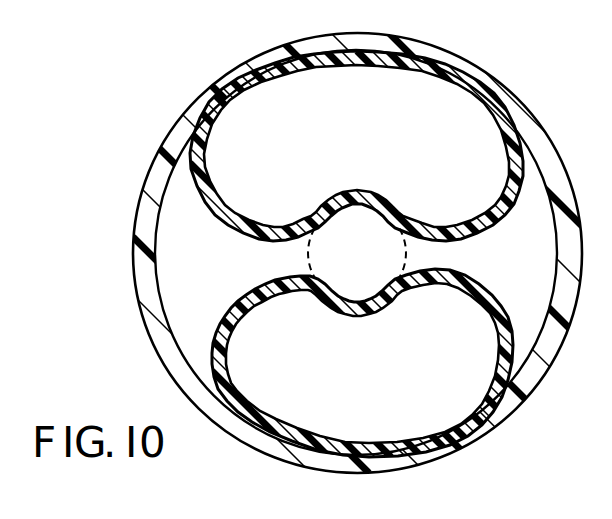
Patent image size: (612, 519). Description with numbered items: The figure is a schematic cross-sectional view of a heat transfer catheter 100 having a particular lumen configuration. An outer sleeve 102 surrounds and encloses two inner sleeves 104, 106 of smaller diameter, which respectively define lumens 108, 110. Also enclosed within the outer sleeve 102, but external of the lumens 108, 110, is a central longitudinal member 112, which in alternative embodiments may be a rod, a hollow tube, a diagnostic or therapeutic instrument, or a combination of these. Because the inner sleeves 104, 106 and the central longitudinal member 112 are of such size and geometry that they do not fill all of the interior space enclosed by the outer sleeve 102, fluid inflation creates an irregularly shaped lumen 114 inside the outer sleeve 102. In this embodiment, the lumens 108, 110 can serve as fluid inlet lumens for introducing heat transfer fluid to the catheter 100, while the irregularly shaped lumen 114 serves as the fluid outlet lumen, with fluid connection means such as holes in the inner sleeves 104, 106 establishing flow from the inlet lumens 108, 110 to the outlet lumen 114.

The heat transfer catheter 100 is at (522, 74).
The outer sleeve 102 is at (197, 111).
The inner sleeve 104 is at (205, 197).
The inner sleeve 106 is at (213, 352).
The lumen 108 is at (362, 144).
The lumen 110 is at (380, 366).
The central longitudinal member 112 is at (410, 257).
The irregularly shaped lumen 114 is at (214, 272).